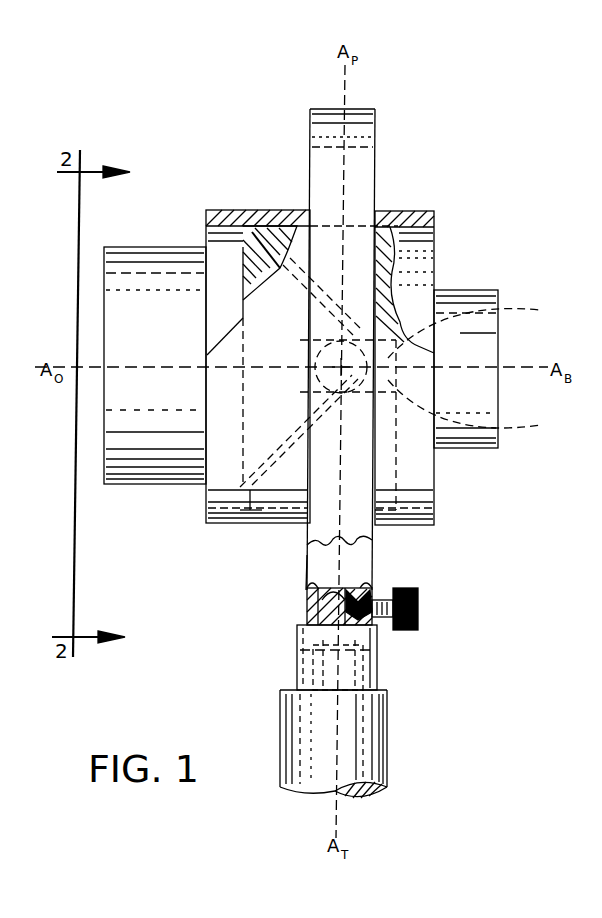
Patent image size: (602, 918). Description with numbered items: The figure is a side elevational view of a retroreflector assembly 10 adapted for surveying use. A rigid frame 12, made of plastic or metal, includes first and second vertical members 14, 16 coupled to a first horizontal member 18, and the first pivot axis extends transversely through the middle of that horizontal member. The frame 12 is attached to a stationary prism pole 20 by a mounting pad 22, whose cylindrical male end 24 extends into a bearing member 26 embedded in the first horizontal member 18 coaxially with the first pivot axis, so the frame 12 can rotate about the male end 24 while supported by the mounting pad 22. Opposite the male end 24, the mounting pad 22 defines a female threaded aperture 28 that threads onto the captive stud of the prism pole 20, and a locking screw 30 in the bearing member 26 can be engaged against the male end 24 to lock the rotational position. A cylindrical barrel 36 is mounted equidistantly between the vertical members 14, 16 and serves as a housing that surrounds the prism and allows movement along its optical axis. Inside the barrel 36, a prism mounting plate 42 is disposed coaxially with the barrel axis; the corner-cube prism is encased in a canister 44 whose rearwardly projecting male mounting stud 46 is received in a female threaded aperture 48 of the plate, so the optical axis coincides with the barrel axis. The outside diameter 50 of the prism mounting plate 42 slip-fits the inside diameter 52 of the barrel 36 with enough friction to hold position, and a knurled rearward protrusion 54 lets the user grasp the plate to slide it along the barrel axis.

The retroreflector assembly 10 is at (492, 122).
The frame 12 is at (278, 566).
The first vertical member 14 is at (360, 553).
The second vertical member 16 is at (318, 533).
The first horizontal member 18 is at (306, 582).
The prism pole 20 is at (375, 726).
The mounting pad 22 is at (378, 658).
The cylindrical male end 24 is at (306, 610).
The bearing member 26 is at (357, 590).
The female threaded aperture 28 is at (296, 674).
The locking screw 30 is at (420, 607).
The cylindrical barrel 36 is at (239, 208).
The prism mounting plate 42 is at (400, 264).
The canister 44 is at (138, 263).
The male mounting stud 46 is at (424, 308).
The female threaded aperture 48 is at (403, 431).
The outside diameter 50 is at (389, 226).
The inside diameter 52 is at (433, 232).
The rearward protrusion 54 is at (500, 330).